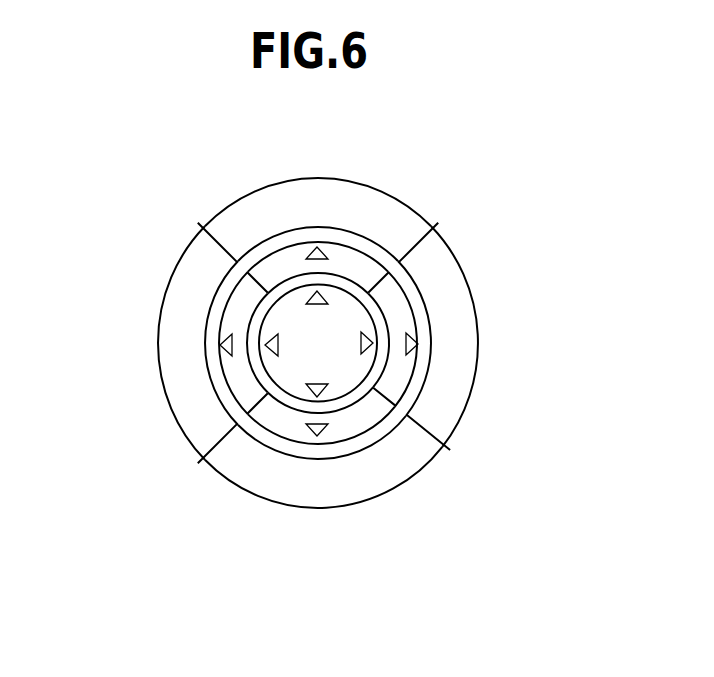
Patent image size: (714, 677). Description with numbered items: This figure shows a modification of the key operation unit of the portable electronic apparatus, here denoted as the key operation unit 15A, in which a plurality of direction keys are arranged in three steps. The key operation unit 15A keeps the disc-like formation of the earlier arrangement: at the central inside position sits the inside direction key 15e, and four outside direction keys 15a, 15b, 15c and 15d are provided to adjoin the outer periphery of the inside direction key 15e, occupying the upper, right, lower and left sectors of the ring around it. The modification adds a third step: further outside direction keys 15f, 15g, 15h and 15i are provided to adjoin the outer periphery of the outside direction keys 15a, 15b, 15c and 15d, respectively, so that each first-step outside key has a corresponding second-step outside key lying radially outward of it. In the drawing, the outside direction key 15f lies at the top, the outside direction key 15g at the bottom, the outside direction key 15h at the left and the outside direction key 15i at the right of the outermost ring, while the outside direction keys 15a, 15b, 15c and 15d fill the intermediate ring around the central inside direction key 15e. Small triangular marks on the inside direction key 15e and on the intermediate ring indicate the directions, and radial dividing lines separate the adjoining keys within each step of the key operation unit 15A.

The key operation unit 15A is at (459, 189).
The outside direction key 15a is at (278, 267).
The outside direction key 15b is at (353, 422).
The outside direction key 15c is at (237, 305).
The outside direction key 15d is at (408, 315).
The inside direction key 15e is at (297, 378).
The outside direction key 15f is at (314, 194).
The outside direction key 15g is at (320, 493).
The outside direction key 15h is at (187, 420).
The outside direction key 15i is at (460, 393).